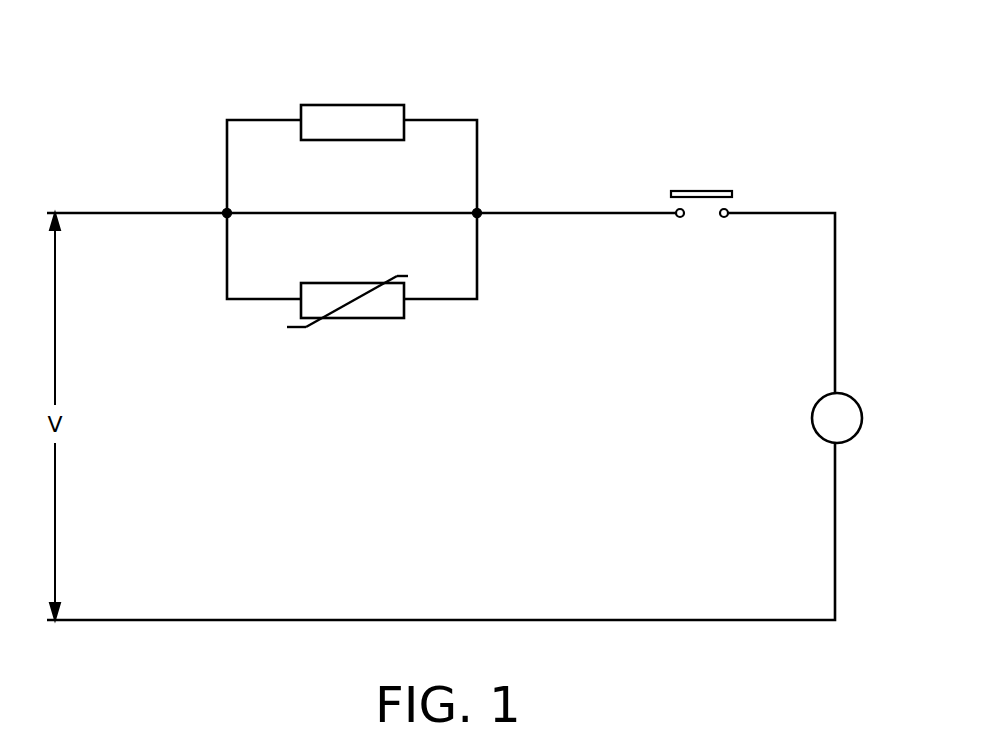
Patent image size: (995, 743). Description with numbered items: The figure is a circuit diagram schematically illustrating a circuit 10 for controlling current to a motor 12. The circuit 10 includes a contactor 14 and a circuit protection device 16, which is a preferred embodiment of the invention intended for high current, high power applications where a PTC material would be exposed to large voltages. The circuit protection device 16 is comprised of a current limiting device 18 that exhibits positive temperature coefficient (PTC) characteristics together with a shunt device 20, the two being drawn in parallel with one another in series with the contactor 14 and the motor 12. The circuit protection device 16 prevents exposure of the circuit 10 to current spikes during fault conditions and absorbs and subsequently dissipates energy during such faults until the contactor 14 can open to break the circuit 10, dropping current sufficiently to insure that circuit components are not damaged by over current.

The circuit 10 is at (720, 76).
The motor 12 is at (857, 403).
The contactor 14 is at (722, 190).
The circuit protection device 16 is at (321, 217).
The current limiting device 18 is at (315, 283).
The shunt device 20 is at (395, 105).